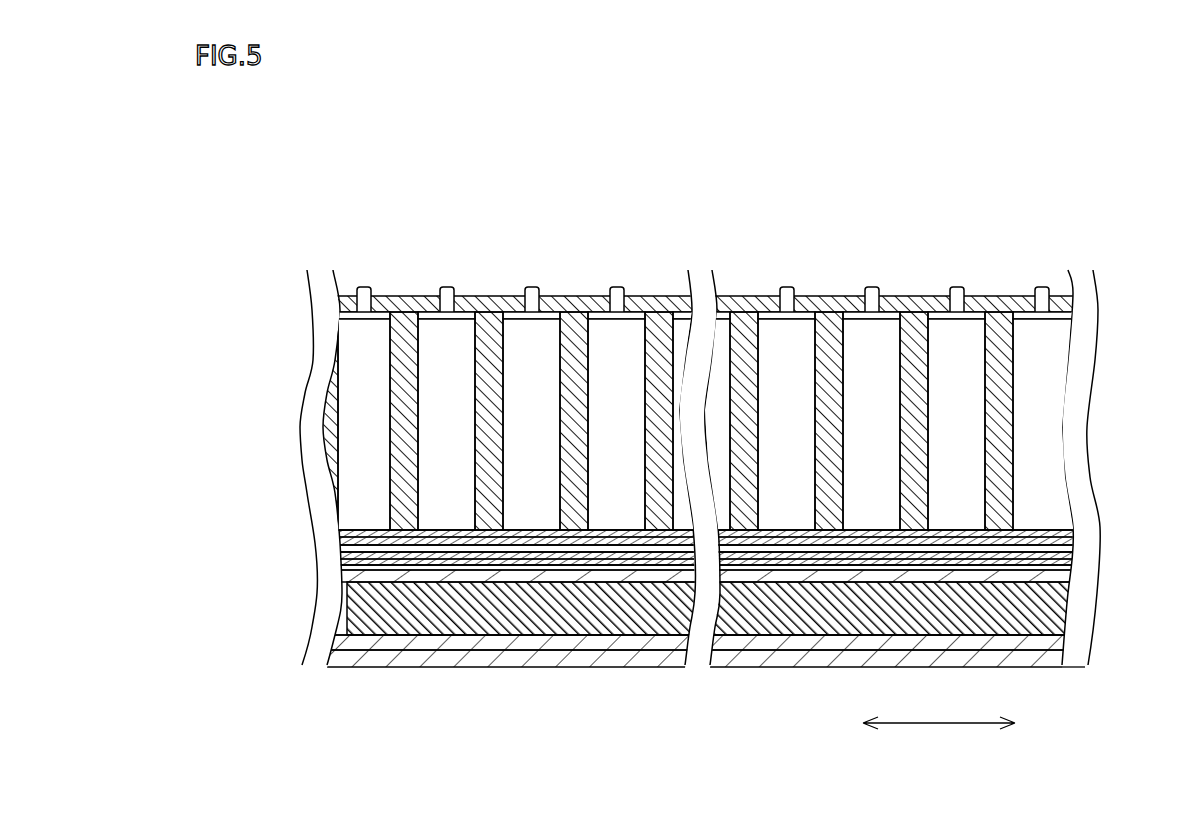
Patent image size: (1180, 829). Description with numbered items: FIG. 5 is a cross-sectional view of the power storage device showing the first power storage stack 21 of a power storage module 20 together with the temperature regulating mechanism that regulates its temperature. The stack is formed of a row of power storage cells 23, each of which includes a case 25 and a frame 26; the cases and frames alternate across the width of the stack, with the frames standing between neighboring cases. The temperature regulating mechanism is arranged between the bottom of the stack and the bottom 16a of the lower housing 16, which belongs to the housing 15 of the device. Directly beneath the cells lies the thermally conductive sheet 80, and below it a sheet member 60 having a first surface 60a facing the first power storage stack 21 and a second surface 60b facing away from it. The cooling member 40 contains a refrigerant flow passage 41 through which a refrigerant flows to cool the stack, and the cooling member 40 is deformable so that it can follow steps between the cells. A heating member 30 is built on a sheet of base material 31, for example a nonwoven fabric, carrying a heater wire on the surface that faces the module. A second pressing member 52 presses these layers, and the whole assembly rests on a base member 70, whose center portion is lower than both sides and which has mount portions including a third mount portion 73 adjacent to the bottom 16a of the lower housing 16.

The power storage module 20 is at (737, 434).
The first power storage stack 21 is at (1092, 184).
The power storage cell 23 is at (500, 242).
The case 25 is at (433, 310).
The frame 26 is at (481, 310).
The sheet member 60 is at (745, 565).
The first surface 60a is at (1058, 570).
The second surface 60b is at (1058, 570).
The thermally conductive sheet 80 is at (620, 534).
The refrigerant flow passage 41 is at (571, 548).
The cooling member 40 is at (520, 557).
The heating member 30 is at (700, 661).
The base material 31 is at (478, 570).
The second pressing member 52 is at (428, 620).
The case 15 is at (702, 708).
The lower housing 16 is at (653, 668).
The bottom 16a is at (797, 641).
The base member 70 is at (700, 696).
The third mount portion 73 is at (372, 640).